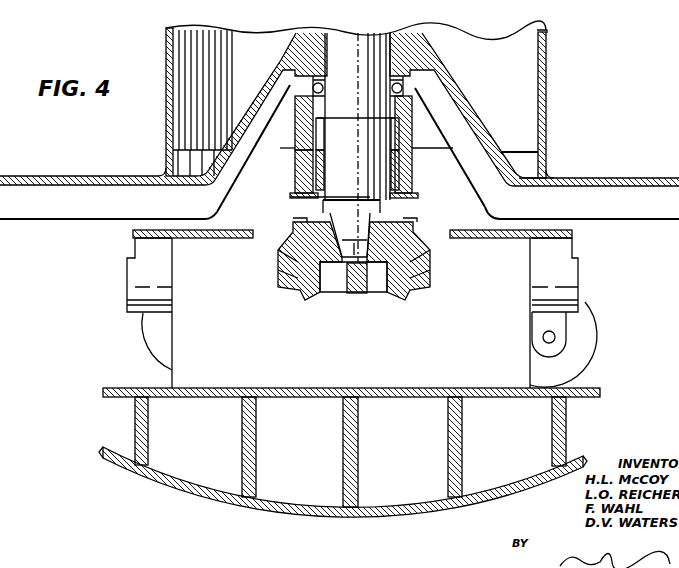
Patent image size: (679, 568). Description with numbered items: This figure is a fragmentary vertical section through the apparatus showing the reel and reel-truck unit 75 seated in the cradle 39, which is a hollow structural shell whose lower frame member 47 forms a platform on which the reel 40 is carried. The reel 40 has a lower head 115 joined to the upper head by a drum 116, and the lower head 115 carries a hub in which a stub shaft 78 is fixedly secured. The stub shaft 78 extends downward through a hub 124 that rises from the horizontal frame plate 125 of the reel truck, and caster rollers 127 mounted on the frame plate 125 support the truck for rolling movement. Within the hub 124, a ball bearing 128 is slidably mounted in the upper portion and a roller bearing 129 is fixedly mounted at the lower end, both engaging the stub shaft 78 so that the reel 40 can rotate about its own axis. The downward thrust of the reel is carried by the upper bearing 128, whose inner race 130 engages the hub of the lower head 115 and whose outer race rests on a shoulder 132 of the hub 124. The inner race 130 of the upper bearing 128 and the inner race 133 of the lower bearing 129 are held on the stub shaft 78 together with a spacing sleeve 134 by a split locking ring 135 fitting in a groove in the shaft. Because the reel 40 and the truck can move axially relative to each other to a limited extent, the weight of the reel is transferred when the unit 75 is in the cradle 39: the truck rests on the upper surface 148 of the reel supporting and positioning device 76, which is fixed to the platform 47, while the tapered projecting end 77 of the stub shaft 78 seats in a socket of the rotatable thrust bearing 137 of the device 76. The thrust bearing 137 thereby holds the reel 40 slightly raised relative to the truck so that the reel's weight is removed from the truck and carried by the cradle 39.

The cradle 39 is at (193, 498).
The reel 40 is at (550, 43).
The lower frame member 47 is at (120, 388).
The reel and reel-truck unit 75 is at (607, 92).
The reel supporting and positioning device 76 is at (167, 325).
The projecting end of stub shaft 77 is at (396, 213).
The stub shaft 78 is at (418, 132).
The lower head 115 is at (38, 176).
The drum 116 is at (547, 68).
The hub 124 is at (453, 148).
The horizontal frame plate 125 is at (540, 209).
The caster rollers 127 is at (598, 331).
The ball bearing 128 is at (268, 84).
The roller bearing 129 is at (308, 168).
The inner race 130 is at (320, 98).
The shoulder 132 is at (296, 130).
The inner race 133 is at (323, 160).
The spacing sleeve 134 is at (326, 132).
The split locking ring 135 is at (288, 203).
The rotatable thrust bearing 137 is at (351, 292).
The upper surface 148 is at (220, 238).